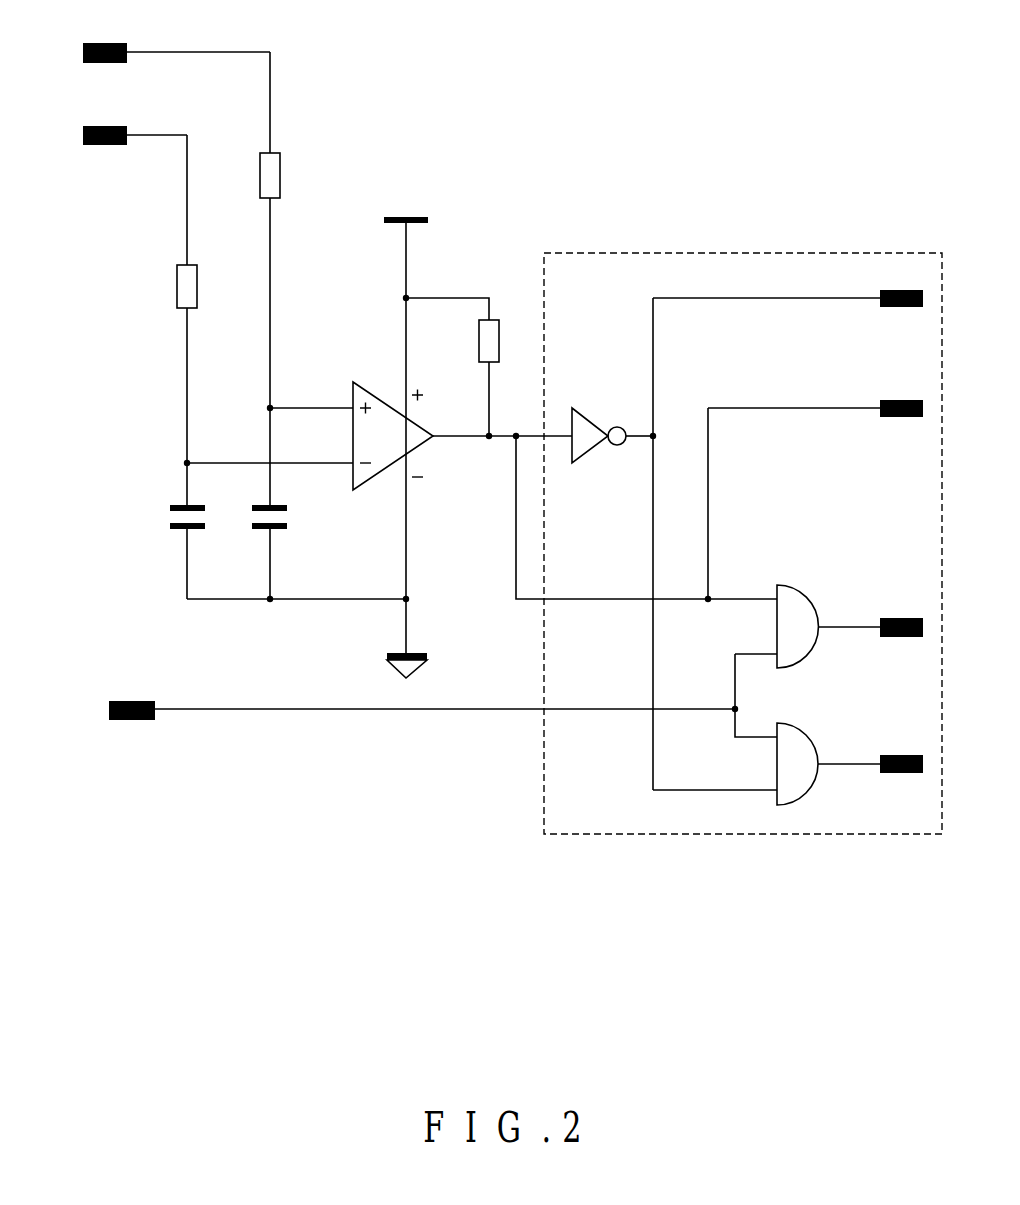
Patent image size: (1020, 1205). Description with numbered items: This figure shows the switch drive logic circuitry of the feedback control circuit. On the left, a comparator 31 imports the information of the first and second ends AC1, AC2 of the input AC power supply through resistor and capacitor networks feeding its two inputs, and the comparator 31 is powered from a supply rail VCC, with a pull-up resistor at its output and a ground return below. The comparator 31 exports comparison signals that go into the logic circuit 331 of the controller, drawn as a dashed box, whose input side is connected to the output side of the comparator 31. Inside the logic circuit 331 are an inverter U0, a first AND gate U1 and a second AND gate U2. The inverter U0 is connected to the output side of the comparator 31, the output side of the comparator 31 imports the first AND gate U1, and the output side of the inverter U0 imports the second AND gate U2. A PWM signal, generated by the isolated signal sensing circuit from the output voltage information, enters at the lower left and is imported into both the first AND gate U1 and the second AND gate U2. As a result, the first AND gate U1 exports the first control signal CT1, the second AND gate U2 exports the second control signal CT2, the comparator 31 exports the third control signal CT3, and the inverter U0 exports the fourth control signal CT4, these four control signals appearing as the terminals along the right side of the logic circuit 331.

The comparator 31 is at (348, 378).
The logic circuit 331 is at (743, 507).
The first end of input AC power supply AC1 is at (176, 44).
The second end of input AC power supply AC2 is at (135, 127).
The supply voltage VCC is at (405, 246).
The PWM signal PWM is at (395, 711).
The inverter U0 is at (612, 422).
The first AND gate U1 is at (828, 622).
The second AND gate U2 is at (766, 759).
The first control signal CT1 is at (901, 614).
The second control signal CT2 is at (901, 751).
The third control signal CT3 is at (815, 394).
The fourth control signal CT4 is at (788, 284).